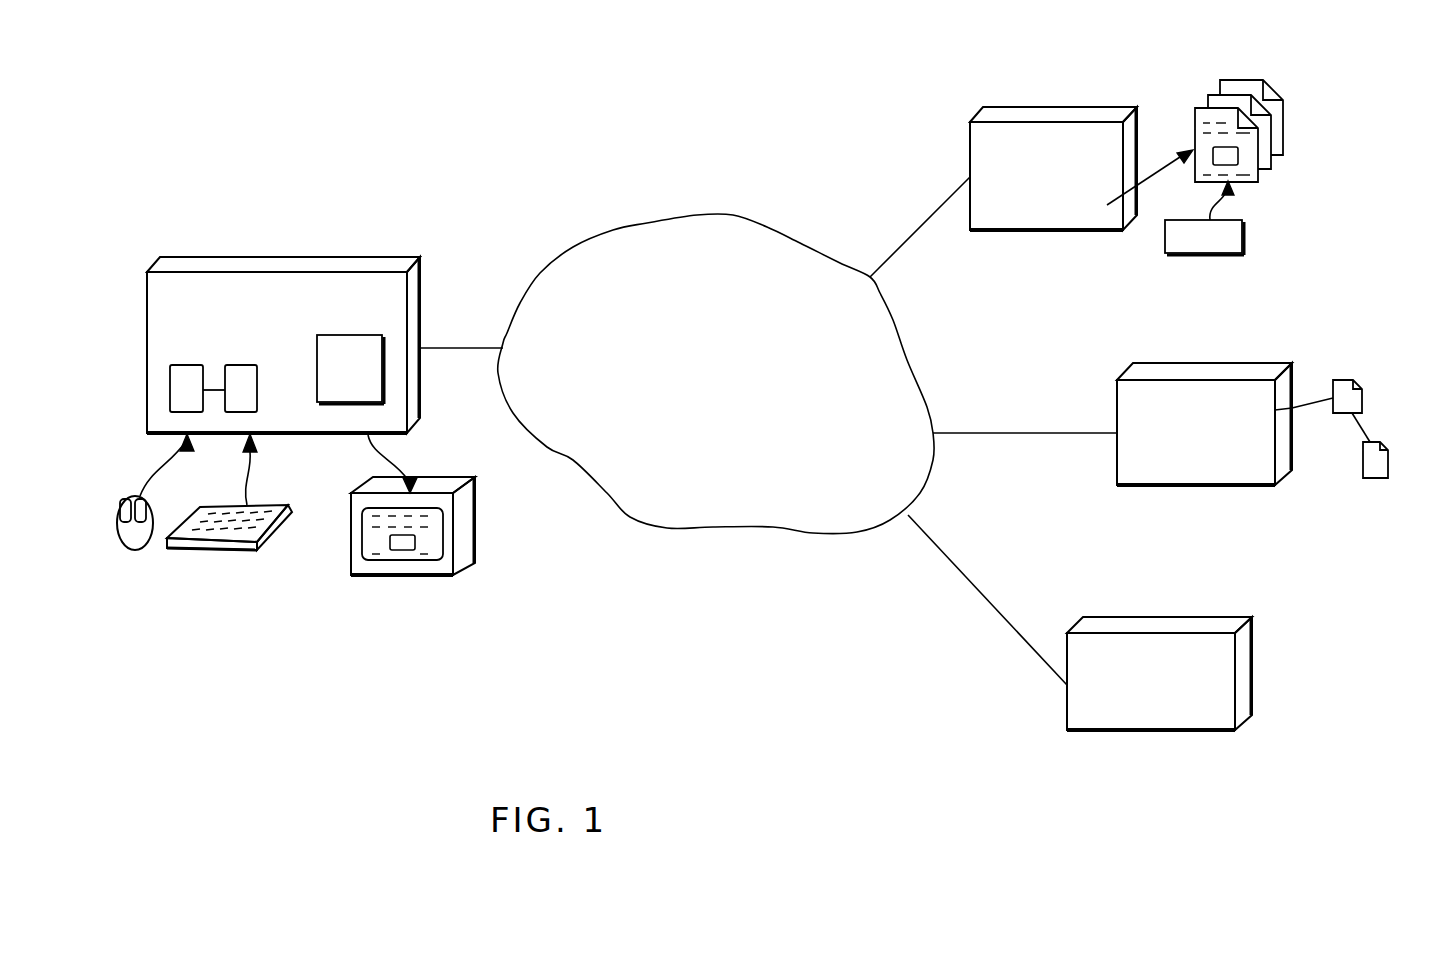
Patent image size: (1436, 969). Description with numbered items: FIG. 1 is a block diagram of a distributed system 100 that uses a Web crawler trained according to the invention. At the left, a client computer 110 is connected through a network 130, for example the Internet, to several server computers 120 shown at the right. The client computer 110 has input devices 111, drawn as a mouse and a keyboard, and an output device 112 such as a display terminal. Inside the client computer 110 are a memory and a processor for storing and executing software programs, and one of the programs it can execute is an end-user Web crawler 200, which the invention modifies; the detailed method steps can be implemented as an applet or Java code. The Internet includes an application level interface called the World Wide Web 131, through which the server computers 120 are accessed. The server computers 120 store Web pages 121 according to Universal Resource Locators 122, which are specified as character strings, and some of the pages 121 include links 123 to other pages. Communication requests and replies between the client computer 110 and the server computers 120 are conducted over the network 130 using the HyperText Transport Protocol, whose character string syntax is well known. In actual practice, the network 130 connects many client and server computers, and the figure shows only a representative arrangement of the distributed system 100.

The distributed system 100 is at (685, 697).
The client computer 110 is at (325, 322).
The input devices 111 is at (135, 551).
The output device 112 is at (405, 577).
The server computers 120 is at (1047, 113).
The Web pages 121 is at (1258, 146).
The Universal Resource Locators (URLs) 122 is at (1244, 235).
The links 123 is at (1363, 434).
The network 130 is at (637, 221).
The World Wide Web 131 is at (728, 440).
The end-user Web crawler 200 is at (326, 384).